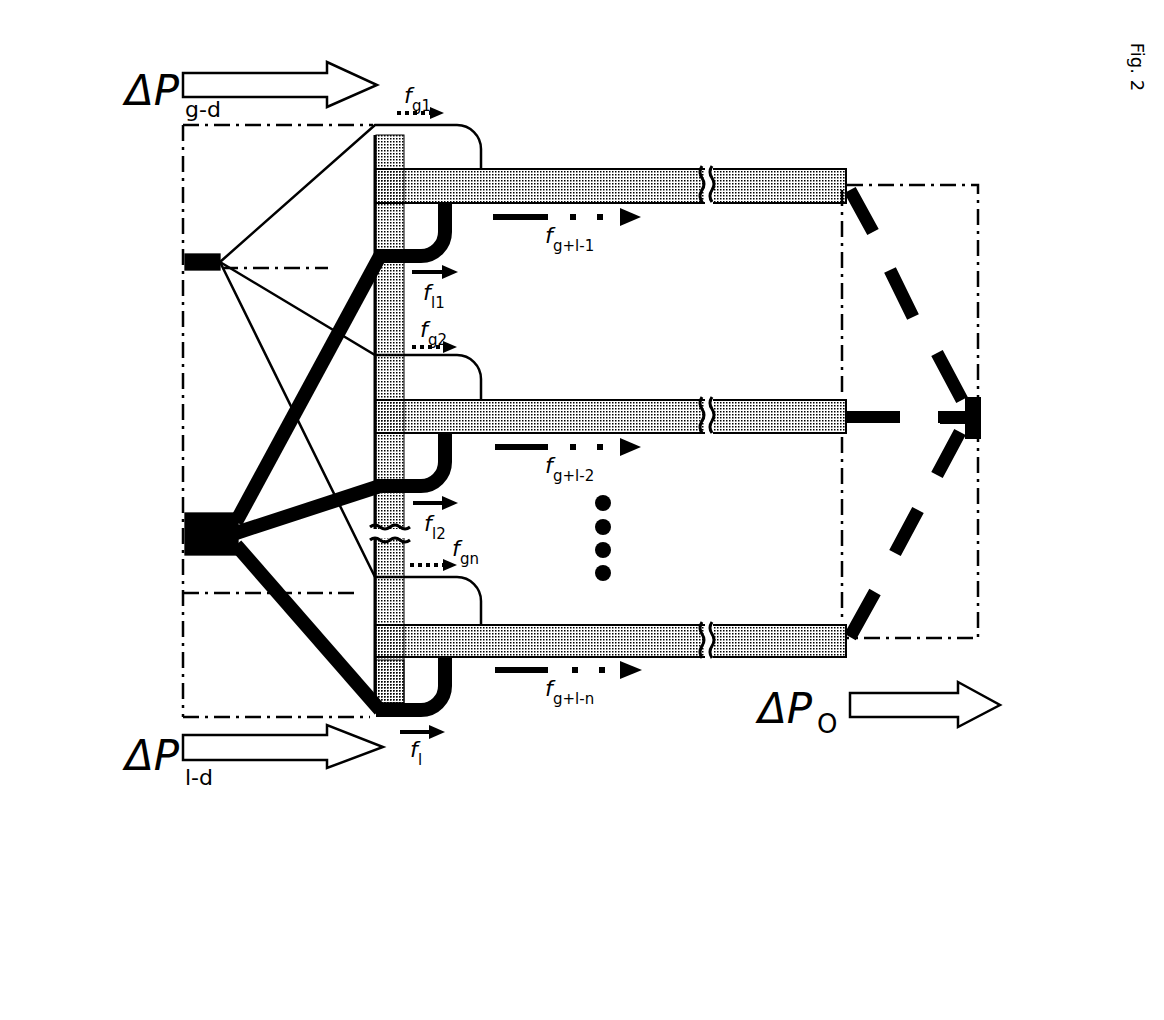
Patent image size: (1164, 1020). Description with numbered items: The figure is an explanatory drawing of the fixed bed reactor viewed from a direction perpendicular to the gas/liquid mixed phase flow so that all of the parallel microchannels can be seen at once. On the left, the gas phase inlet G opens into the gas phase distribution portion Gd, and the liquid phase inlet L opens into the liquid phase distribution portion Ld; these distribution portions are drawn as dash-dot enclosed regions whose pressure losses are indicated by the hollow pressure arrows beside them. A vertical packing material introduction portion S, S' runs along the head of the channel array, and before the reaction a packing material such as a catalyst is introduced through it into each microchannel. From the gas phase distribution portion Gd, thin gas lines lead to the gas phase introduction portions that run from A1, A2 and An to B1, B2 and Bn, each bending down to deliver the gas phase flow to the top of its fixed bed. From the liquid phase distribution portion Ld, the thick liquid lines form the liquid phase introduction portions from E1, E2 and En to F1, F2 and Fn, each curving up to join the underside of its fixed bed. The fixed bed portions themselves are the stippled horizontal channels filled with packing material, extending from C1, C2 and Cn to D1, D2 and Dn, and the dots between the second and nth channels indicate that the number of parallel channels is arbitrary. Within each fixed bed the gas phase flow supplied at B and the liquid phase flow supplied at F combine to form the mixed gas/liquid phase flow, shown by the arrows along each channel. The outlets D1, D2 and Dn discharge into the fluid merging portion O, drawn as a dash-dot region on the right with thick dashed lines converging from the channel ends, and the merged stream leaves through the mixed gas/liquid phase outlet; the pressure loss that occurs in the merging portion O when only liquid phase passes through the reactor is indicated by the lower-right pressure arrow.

The gas phase inlet G is at (181, 269).
The liquid phase inlet L is at (194, 537).
The gas phase distribution portion Gd is at (278, 421).
The liquid phase distribution portion Ld is at (276, 655).
The flow merging portion O is at (910, 411).
The packing material introduction portion S is at (401, 419).
The packing material introduction portion S' is at (406, 681).
The gas phase introduction portion A1 is at (338, 180).
The gas phase introduction portion A2 is at (338, 323).
The gas phase introduction portion An is at (338, 428).
The gas phase introduction portion B1 is at (487, 147).
The gas phase introduction portion B2 is at (487, 377).
The gas phase introduction portion Bn is at (487, 601).
The fixed bed portion C1 is at (589, 185).
The fixed bed portion C2 is at (589, 416).
The fixed bed portion Cn is at (591, 640).
The fixed bed portion D1 is at (904, 279).
The fixed bed portion D2 is at (906, 437).
The fixed bed portion Dn is at (905, 557).
The liquid phase introduction portion E1 is at (308, 385).
The liquid phase introduction portion E2 is at (308, 498).
The liquid phase introduction portion En is at (308, 631).
The liquid phase introduction portion F1 is at (430, 229).
The liquid phase introduction portion F2 is at (430, 459).
The liquid phase introduction portion Fn is at (430, 683).